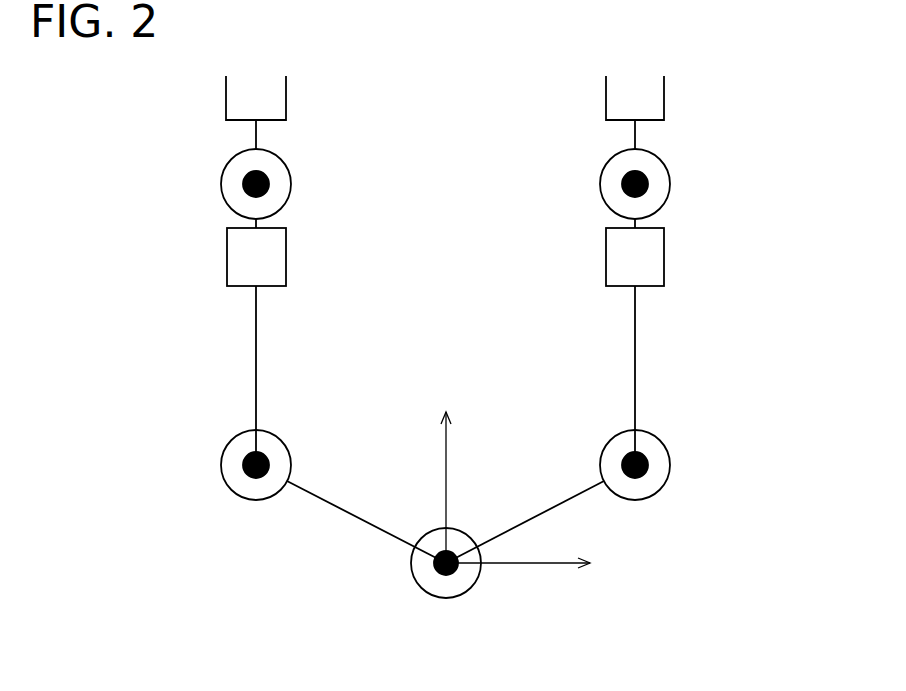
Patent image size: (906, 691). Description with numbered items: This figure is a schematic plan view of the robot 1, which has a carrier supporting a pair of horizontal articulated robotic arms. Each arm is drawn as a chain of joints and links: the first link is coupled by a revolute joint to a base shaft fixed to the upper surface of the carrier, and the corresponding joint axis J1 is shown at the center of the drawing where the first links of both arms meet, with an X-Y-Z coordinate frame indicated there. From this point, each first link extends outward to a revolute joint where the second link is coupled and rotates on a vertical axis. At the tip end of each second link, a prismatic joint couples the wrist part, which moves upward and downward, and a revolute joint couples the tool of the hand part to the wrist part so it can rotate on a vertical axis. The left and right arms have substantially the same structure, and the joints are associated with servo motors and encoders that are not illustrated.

The robot 1 is at (445, 356).
The joint axis J1 is at (471, 588).